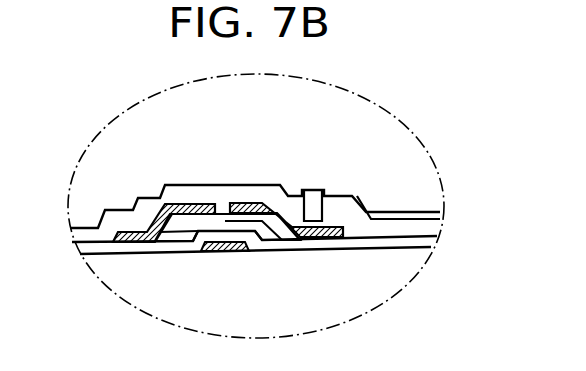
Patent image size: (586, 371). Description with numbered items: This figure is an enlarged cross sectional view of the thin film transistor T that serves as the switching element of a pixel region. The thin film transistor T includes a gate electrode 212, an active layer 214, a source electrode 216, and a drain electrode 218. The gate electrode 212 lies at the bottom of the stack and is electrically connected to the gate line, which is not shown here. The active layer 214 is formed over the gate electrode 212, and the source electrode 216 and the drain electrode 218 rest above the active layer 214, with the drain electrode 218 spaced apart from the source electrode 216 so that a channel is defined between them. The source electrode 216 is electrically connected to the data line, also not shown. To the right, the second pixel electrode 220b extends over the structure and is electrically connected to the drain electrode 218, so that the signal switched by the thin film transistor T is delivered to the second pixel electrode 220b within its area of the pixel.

The thin film transistor T is at (97, 138).
The gate electrode 212 is at (226, 252).
The active layer 214 is at (223, 213).
The source electrode 216 is at (197, 205).
The drain electrode 218 is at (262, 203).
The second pixel electrode 220b is at (402, 212).